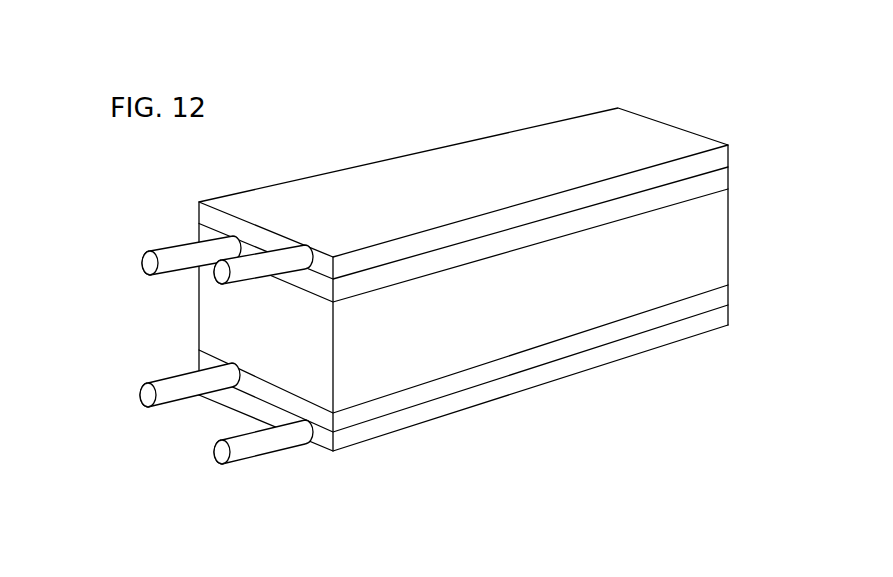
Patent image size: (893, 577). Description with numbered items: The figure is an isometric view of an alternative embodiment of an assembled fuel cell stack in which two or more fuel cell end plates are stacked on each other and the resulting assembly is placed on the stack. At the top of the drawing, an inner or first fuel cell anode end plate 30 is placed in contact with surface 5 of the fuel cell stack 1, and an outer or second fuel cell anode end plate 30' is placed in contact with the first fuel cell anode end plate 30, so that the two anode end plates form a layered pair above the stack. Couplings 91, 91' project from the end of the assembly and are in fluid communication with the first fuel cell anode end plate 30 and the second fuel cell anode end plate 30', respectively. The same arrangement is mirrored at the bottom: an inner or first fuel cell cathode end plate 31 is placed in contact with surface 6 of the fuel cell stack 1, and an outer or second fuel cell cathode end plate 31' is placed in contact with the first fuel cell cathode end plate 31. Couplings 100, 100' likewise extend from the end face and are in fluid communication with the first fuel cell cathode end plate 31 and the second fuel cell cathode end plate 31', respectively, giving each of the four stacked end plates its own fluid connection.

The fuel cell stack 1 is at (510, 242).
The second fuel cell anode end plate 30' is at (497, 193).
The first fuel cell anode end plate 30 is at (498, 227).
The surface 5 is at (728, 190).
The surface 6 is at (728, 285).
The first fuel cell cathode end plate 31 is at (503, 357).
The second fuel cell cathode end plate 31' is at (510, 383).
The coupling 91 is at (164, 278).
The coupling 91' is at (197, 301).
The coupling 100 is at (153, 408).
The coupling 100' is at (242, 471).